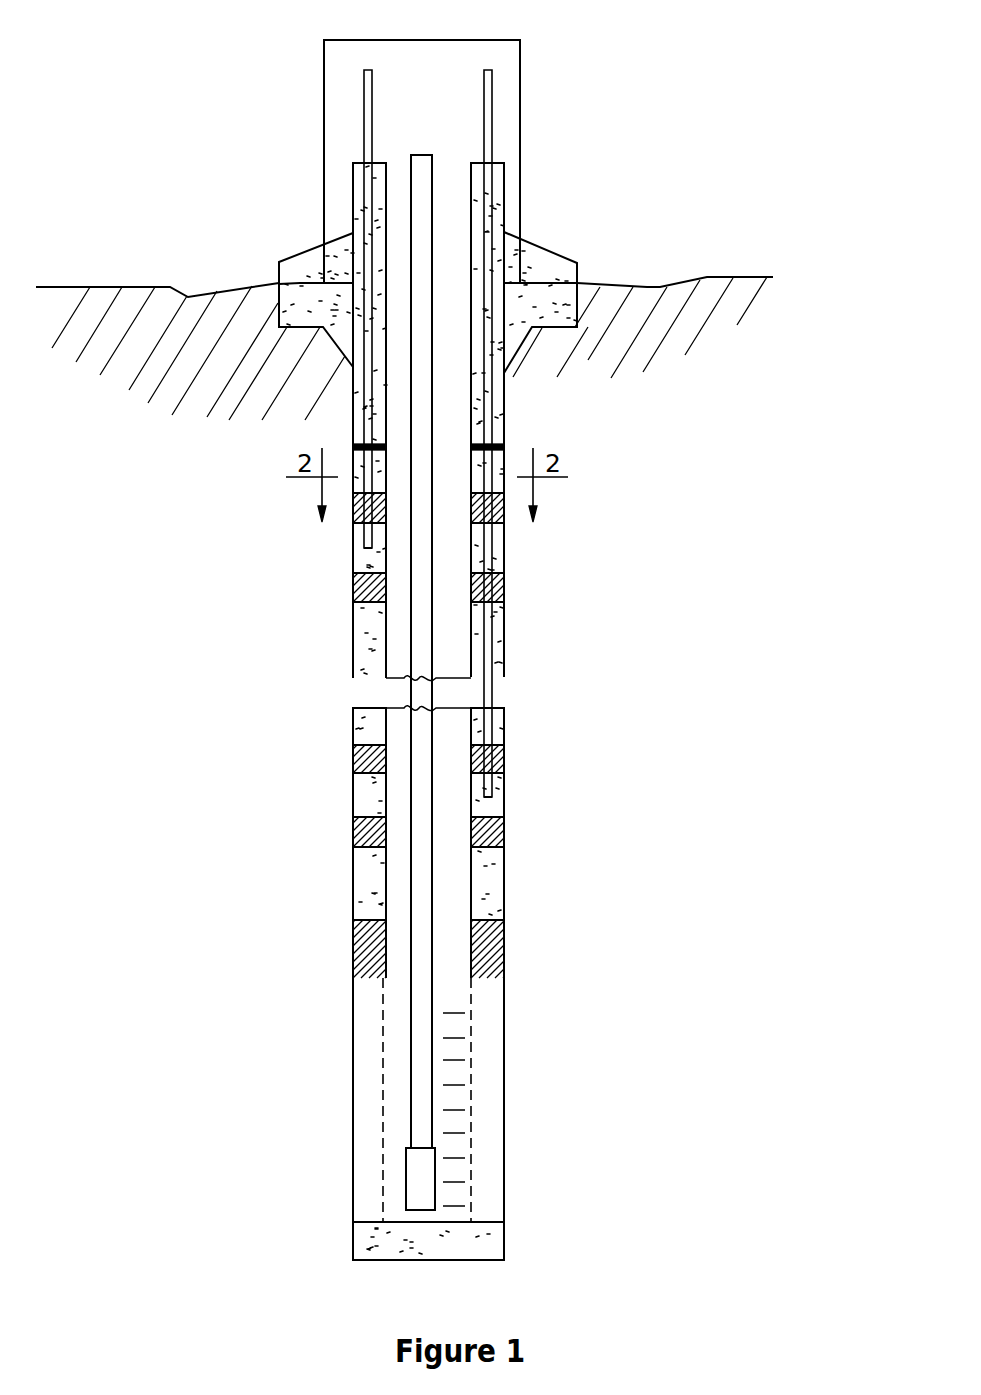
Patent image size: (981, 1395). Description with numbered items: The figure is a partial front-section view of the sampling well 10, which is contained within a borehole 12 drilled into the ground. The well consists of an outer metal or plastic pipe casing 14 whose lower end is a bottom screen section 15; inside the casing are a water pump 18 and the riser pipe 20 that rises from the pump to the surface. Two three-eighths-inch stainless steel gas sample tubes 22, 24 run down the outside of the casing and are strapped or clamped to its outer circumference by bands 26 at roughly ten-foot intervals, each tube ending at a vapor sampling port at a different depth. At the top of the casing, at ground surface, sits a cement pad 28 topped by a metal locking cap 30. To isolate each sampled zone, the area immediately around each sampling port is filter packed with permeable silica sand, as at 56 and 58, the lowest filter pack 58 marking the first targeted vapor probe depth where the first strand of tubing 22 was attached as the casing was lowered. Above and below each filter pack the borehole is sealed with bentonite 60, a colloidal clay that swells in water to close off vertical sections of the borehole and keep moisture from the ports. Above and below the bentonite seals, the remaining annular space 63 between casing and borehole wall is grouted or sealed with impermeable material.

The sampling well 10 is at (755, 415).
The borehole 12 is at (504, 727).
The pipe casing 14 is at (471, 1130).
The bottom screen section 15 is at (383, 1085).
The water pump 18 is at (405, 1193).
The riser pipe 20 is at (421, 152).
The gas sample tube 22 is at (364, 433).
The gas sample tube 24 is at (504, 410).
The bands 26 is at (353, 447).
The cement pad 28 is at (548, 248).
The metal locking cap 30 is at (520, 112).
The filter pack 56 is at (358, 548).
The filter pack at lowest vapor probe depth 58 is at (498, 790).
The bentonite 60 is at (504, 592).
The annular space 63 is at (358, 370).